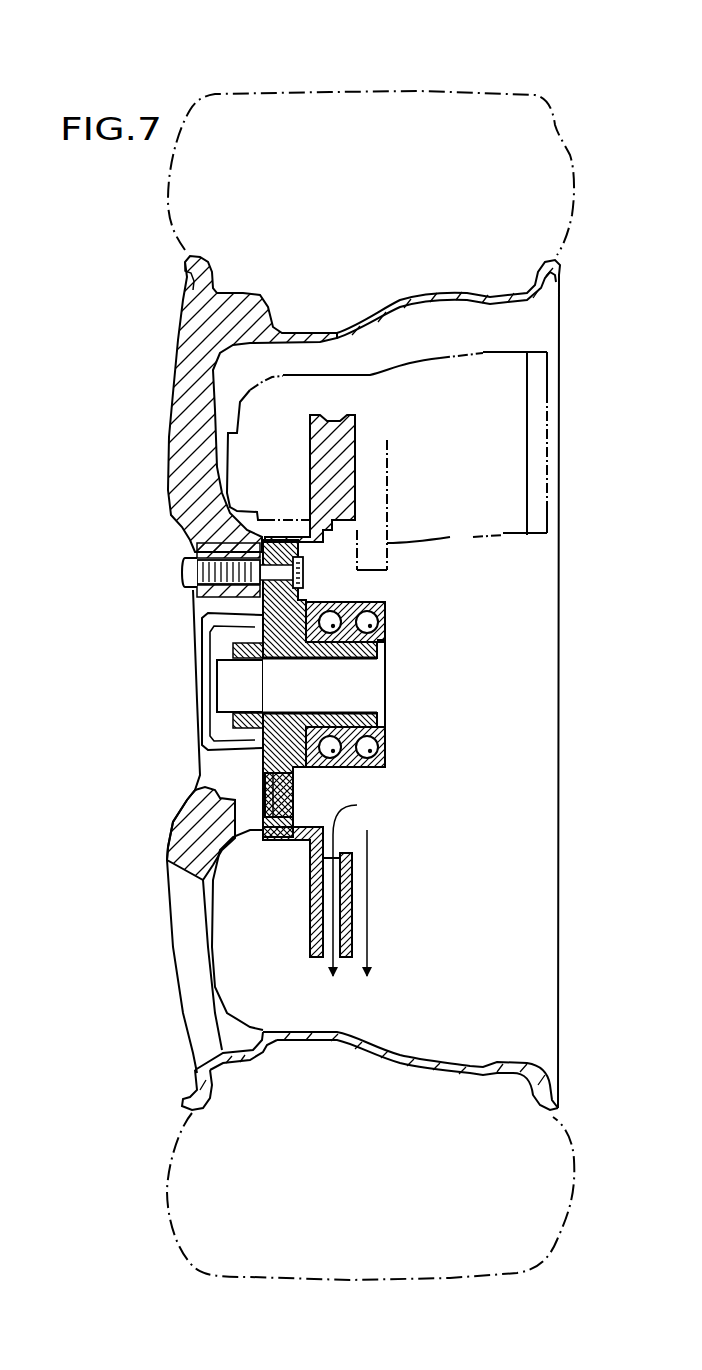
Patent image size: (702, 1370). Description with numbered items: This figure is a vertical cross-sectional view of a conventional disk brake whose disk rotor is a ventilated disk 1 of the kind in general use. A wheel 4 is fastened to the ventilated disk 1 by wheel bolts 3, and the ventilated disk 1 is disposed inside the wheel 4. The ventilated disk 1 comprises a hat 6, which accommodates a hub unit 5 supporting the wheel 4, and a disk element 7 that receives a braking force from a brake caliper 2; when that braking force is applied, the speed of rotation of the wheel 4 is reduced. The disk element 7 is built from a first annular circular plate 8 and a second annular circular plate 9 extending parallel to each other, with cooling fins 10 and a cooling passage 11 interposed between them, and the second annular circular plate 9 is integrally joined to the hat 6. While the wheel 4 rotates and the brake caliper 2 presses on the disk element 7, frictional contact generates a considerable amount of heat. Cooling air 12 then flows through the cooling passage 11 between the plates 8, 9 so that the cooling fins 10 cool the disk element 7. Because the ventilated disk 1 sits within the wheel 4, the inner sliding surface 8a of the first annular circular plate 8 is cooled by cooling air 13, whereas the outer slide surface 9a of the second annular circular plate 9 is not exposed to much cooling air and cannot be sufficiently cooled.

The ventilated disk 1 is at (260, 907).
The brake caliper 2 is at (500, 528).
The wheel bolts 3 is at (186, 577).
The wheel 4 is at (175, 1178).
The hub unit 5 is at (382, 647).
The hat 6 is at (268, 800).
The disk element 7 is at (338, 913).
The first annular circular plate 8 is at (353, 932).
The inner sliding surface 8a is at (353, 883).
The second annular circular plate 9 is at (310, 870).
The outer slide surface 9a is at (308, 878).
The cooling fins 10 is at (343, 500).
The cooling passage 11 is at (330, 943).
The cooling air 12 is at (331, 826).
The cooling air 13 is at (368, 840).